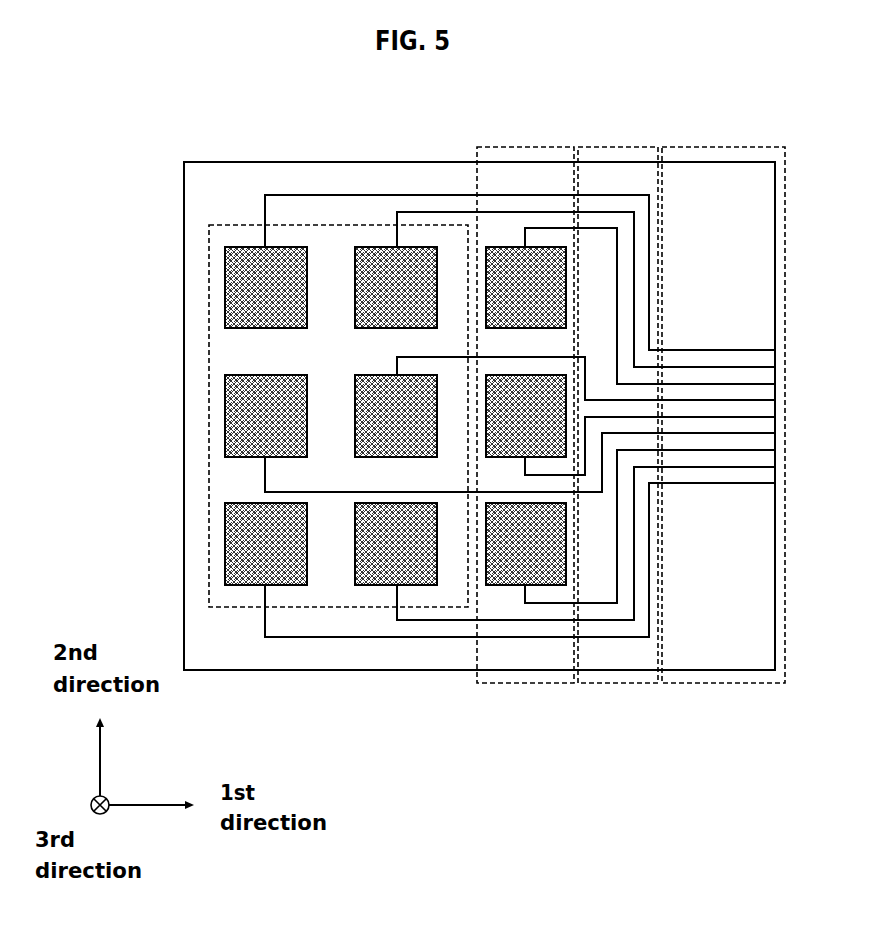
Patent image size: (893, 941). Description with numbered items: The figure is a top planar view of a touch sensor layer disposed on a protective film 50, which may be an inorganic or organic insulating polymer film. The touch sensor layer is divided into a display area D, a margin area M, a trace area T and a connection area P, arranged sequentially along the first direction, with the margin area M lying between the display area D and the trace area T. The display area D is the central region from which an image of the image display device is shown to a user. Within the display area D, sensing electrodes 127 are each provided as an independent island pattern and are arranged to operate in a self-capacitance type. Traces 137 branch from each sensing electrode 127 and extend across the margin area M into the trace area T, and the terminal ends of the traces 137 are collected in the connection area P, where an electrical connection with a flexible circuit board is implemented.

The protective film 50 is at (347, 180).
The sensing electrodes 127 is at (237, 417).
The traces 137 is at (358, 639).
The display area D is at (237, 218).
The margin area M is at (527, 694).
The trace area T is at (619, 694).
The connection area P is at (726, 694).